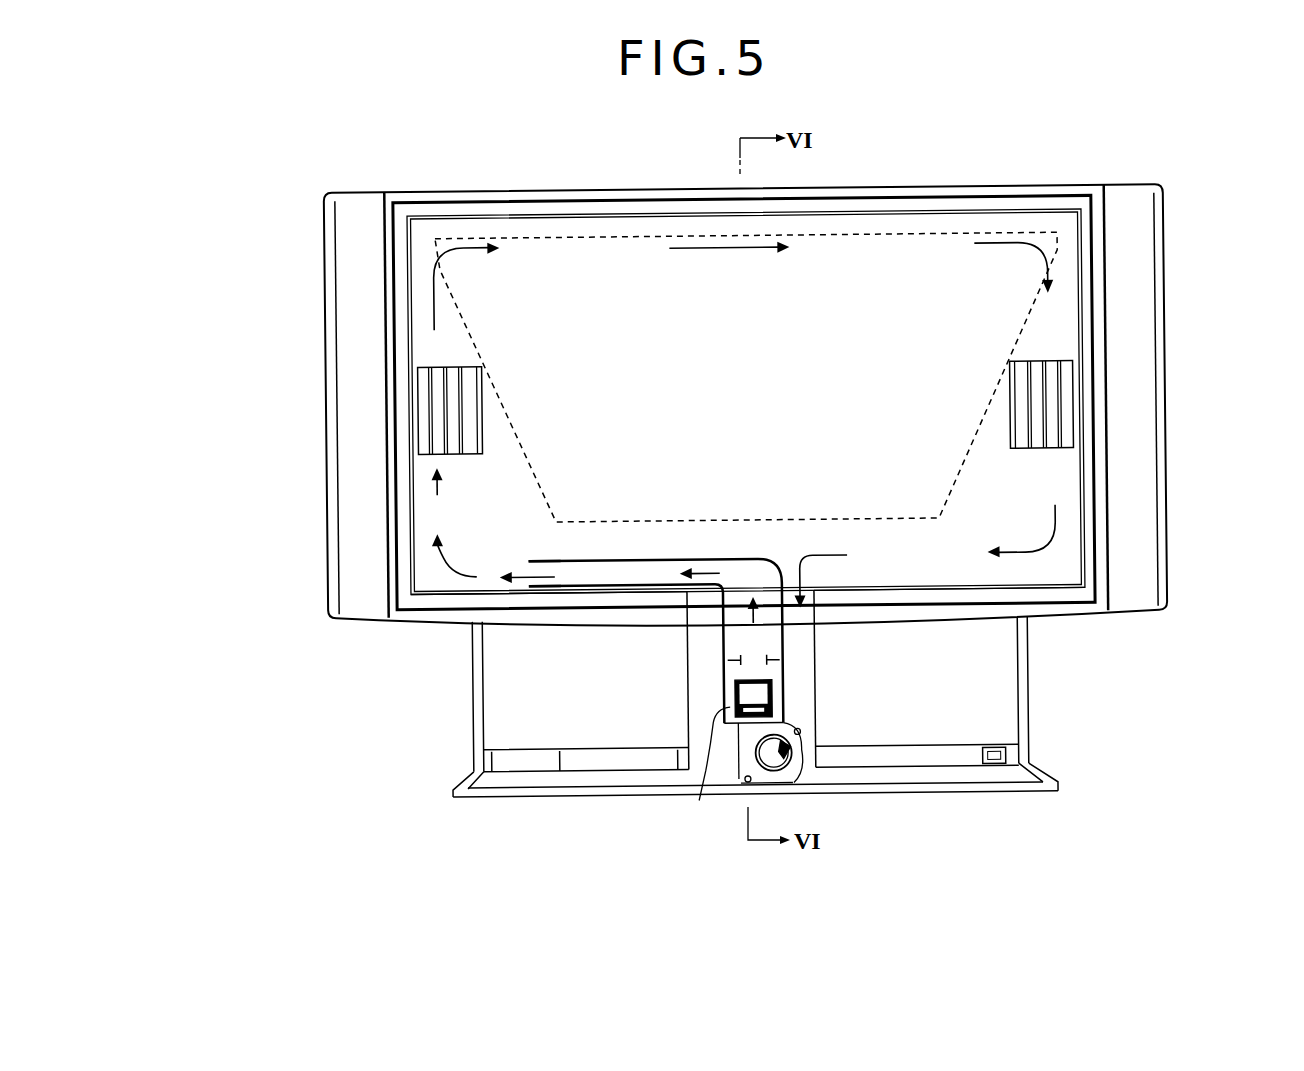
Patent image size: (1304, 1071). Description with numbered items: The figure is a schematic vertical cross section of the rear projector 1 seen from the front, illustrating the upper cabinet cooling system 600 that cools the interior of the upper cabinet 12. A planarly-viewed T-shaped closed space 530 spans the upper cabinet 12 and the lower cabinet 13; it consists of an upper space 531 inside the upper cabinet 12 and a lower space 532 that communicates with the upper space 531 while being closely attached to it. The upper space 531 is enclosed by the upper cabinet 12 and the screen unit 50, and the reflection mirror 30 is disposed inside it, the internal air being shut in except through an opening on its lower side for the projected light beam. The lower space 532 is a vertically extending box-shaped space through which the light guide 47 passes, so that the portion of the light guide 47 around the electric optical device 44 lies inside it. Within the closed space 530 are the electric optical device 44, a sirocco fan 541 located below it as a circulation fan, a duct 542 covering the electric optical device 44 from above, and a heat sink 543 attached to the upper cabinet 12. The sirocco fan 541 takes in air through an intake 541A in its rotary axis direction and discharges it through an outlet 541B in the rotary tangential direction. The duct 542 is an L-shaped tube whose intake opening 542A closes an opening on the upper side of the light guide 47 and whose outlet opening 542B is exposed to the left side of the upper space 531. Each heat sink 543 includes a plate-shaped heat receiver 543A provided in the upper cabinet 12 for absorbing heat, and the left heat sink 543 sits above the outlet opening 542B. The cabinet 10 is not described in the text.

The rear projector 1 is at (275, 187).
The cabinet 10 is at (1105, 585).
The upper cabinet 12 is at (1047, 610).
The lower cabinet 13 is at (1007, 715).
The reflection mirror 30 is at (907, 231).
The electric optical device 44 is at (735, 688).
The light guide 47 is at (695, 800).
The screen unit 50 is at (1090, 242).
The closed space 530 is at (393, 650).
The upper space 531 is at (468, 555).
The lower space 532 is at (697, 737).
The sirocco fan 541 is at (814, 777).
The intake 541A is at (783, 748).
The outlet 541B is at (740, 778).
The duct 542 is at (782, 645).
The intake opening 542A is at (775, 660).
The outlet opening 542B is at (528, 560).
The heat sink 543 is at (428, 400).
The heat receiver 543A is at (428, 432).
The upper cabinet cooling system 600 is at (473, 248).